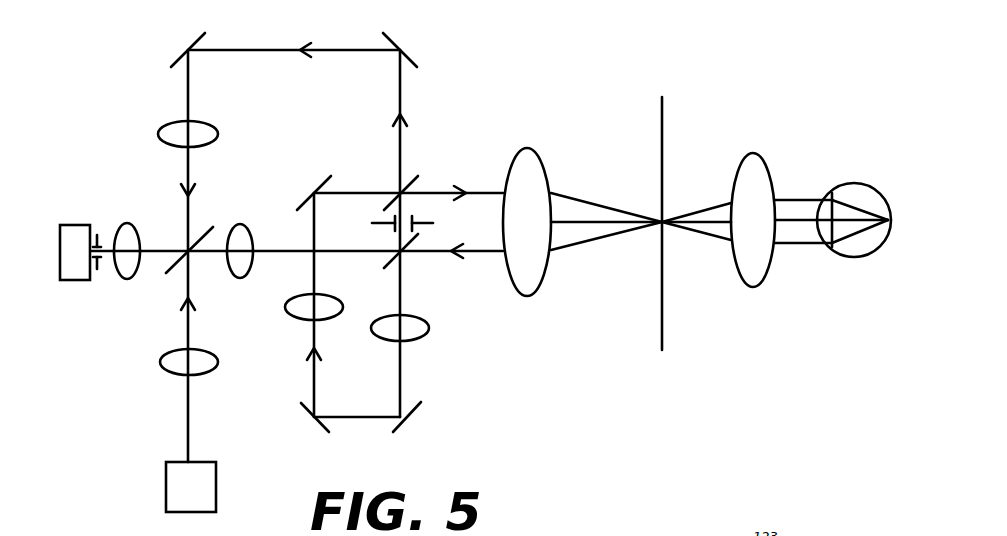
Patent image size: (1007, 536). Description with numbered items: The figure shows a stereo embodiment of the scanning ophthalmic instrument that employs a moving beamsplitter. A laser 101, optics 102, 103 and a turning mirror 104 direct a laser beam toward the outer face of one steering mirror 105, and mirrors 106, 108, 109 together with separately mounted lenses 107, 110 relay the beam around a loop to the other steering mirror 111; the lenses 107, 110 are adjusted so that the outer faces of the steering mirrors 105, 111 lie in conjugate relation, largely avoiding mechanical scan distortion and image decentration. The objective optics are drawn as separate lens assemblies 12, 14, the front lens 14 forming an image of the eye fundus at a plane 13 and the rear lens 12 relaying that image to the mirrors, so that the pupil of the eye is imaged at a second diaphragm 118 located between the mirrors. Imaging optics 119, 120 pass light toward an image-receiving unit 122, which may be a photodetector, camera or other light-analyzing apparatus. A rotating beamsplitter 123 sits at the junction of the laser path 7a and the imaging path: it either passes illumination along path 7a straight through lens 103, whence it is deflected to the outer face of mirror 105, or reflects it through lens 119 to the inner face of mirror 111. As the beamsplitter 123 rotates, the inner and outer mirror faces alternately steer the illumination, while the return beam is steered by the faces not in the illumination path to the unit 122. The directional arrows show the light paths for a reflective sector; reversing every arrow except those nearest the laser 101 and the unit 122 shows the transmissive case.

The laser 101 is at (216, 482).
The optics 102 is at (161, 362).
The lens 103 is at (160, 128).
The turning mirror 104 is at (396, 36).
The steering mirror 105 is at (408, 188).
The mirror 106 is at (322, 181).
The lens 107 is at (294, 318).
The mirror 108 is at (304, 418).
The mirror 109 is at (412, 420).
The lens 110 is at (424, 320).
The steering mirror 111 is at (404, 256).
The second diaphragm 118 is at (372, 224).
The imaging optics 119 is at (242, 224).
The imaging optics 120 is at (127, 224).
The image-receiving unit 122 is at (76, 225).
The rotating beamsplitter 123 is at (170, 272).
The laser path 7a is at (180, 248).
The rear lens 12 is at (518, 150).
The image plane 13 is at (662, 137).
The front lens 14 is at (755, 153).